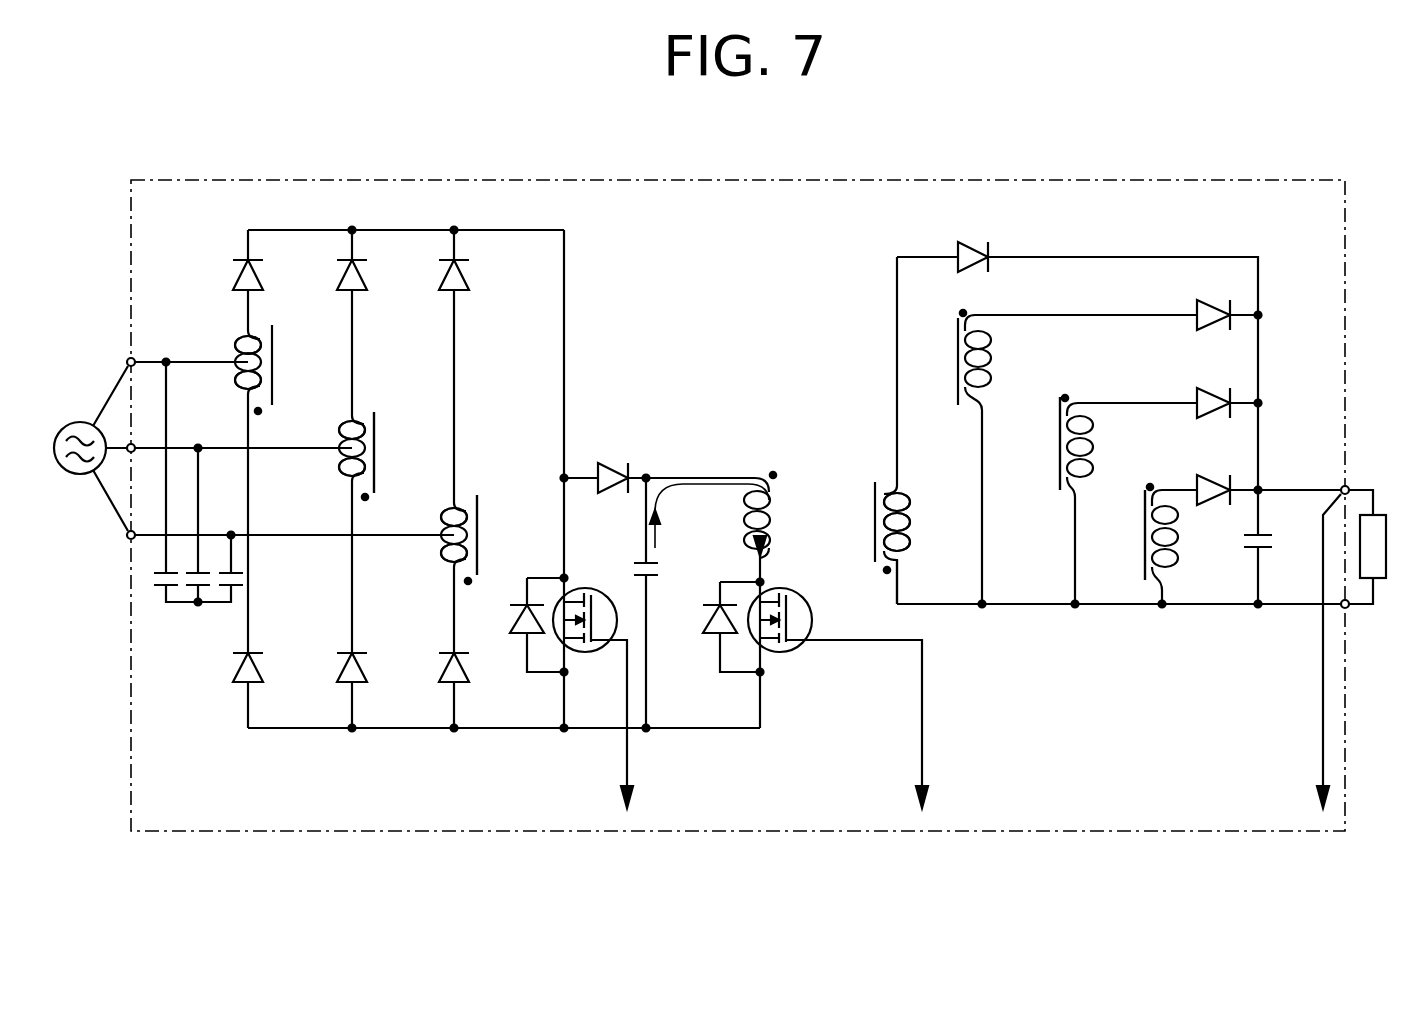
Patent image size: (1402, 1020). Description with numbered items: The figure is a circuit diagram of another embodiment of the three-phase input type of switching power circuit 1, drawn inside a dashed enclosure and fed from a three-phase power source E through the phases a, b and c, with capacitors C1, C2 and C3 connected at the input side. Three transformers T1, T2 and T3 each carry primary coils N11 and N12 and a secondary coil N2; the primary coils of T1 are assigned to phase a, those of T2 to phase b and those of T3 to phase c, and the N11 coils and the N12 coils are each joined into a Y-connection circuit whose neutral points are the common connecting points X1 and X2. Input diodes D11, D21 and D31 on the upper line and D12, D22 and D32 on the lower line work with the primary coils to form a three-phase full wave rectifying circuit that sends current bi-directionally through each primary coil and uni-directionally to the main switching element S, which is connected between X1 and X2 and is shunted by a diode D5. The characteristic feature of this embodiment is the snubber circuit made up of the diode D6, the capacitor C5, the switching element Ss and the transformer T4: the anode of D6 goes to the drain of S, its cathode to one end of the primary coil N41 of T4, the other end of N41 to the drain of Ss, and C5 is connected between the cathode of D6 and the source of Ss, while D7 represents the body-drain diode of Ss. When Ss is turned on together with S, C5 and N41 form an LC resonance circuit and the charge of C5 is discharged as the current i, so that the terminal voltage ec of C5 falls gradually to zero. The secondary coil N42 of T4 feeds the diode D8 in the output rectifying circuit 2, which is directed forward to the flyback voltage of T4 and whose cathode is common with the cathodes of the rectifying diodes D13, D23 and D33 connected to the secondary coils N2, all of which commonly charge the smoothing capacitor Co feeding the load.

The 3-phase input type of switching power circuit 1 is at (649, 178).
The output rectifying circuit 2 is at (1090, 226).
The common connecting point X1 is at (338, 228).
The common connecting point X2 is at (343, 730).
The 3-phase power source E is at (72, 476).
The phase a is at (129, 359).
The phase b is at (128, 445).
The phase c is at (129, 539).
The capacitor C1 is at (164, 590).
The capacitor C2 is at (201, 602).
The capacitor C3 is at (247, 582).
The input diode D11 is at (262, 276).
The input diode D21 is at (366, 276).
The input diode D31 is at (468, 276).
The input diode D12 is at (236, 682).
The input diode D22 is at (336, 682).
The input diode D32 is at (440, 680).
The transformer T1 is at (312, 371).
The transformer T2 is at (413, 460).
The transformer T3 is at (517, 546).
The primary coil N11 is at (236, 346).
The primary coil N12 is at (236, 379).
The secondary coil N2 is at (990, 363).
The diode D6 is at (612, 453).
The capacitor C5 is at (632, 566).
The terminal voltage ec is at (666, 572).
The electric current i is at (664, 499).
The switching element S is at (601, 589).
The diode D5 is at (512, 621).
The switching element Ss is at (813, 589).
The diode D7 is at (703, 645).
The primary coil N41 is at (774, 497).
The secondary coil N42 is at (930, 504).
The transformer T4 is at (868, 528).
The diode D8 is at (975, 244).
The rectifying diode D13 is at (1212, 302).
The rectifying diode D23 is at (1212, 389).
The rectifying diode D33 is at (1212, 478).
The smoothing capacitor Co is at (1244, 548).